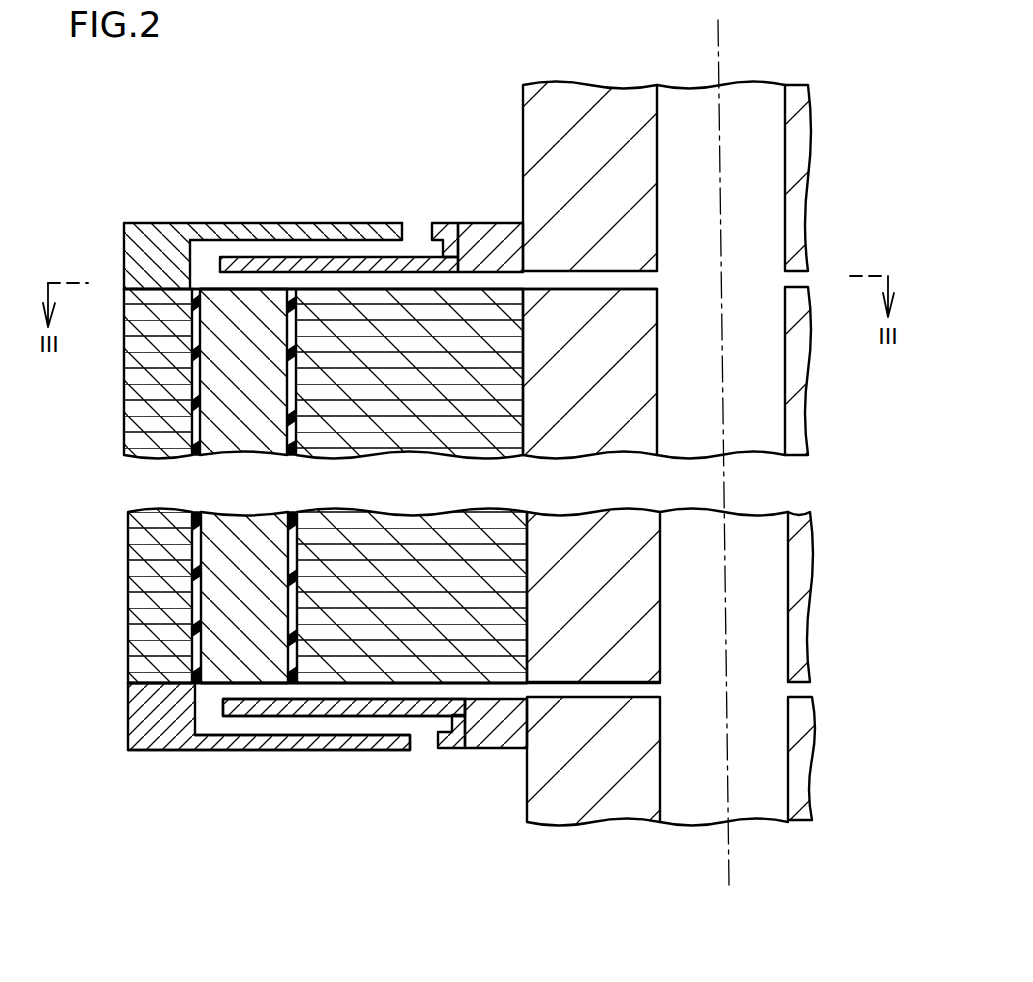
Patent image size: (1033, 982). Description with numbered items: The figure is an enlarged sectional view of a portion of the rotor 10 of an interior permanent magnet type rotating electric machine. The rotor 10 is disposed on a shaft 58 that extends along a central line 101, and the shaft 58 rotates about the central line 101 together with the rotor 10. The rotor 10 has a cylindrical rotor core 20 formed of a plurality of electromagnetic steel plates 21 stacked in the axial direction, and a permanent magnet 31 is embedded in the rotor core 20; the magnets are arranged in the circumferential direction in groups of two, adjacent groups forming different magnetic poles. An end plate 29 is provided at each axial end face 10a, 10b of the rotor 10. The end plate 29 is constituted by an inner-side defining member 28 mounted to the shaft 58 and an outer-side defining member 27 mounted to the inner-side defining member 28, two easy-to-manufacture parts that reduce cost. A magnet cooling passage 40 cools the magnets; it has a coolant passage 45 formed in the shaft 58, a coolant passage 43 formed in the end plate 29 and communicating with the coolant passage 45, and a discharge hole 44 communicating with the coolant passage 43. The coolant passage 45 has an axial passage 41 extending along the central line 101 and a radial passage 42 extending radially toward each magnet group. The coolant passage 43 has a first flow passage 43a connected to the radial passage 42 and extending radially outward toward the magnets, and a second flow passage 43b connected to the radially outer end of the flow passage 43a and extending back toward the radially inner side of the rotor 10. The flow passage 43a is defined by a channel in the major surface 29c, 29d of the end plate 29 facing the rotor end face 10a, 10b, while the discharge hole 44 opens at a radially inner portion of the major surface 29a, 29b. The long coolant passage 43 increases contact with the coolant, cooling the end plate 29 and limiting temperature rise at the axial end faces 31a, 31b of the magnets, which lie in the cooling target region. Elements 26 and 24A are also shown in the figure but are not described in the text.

The rotor 10 is at (76, 458).
The rotor core 20 is at (86, 589).
The frame member 26 is at (192, 297).
The permanent magnet 31 is at (235, 300).
The axial end face of permanent magnet 31a is at (262, 297).
The axial end face of permanent magnet 31b is at (262, 686).
The end plate 29 is at (287, 224).
The inner-side defining member 28 is at (237, 708).
The outer-side defining member 27 is at (145, 732).
The axial end face of rotor 10a is at (327, 288).
The axial end face of rotor 10b is at (323, 686).
The electromagnetic steel plate 21 is at (381, 330).
The major surface of end plate 29a is at (495, 222).
The major surface of end plate 29b is at (203, 752).
The major surface of end plate 29c is at (450, 294).
The major surface of end plate 29d is at (505, 680).
The partition strip 24A is at (192, 393).
The shaft 58 is at (587, 103).
The magnet cooling passage 40 is at (345, 917).
The coolant passage 43 is at (312, 885).
The first flow passage 43a is at (443, 715).
The second flow passage 43b is at (355, 717).
The discharge hole 44 is at (440, 742).
The coolant passage 45 is at (683, 885).
The radial passage 42 is at (565, 690).
The axial passage 41 is at (661, 796).
The central line 101 is at (730, 850).